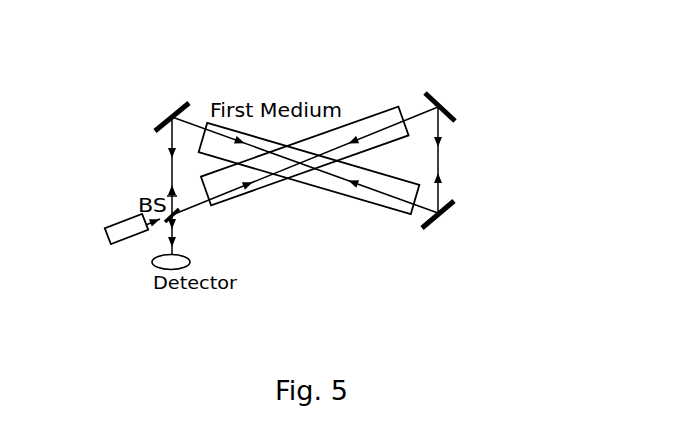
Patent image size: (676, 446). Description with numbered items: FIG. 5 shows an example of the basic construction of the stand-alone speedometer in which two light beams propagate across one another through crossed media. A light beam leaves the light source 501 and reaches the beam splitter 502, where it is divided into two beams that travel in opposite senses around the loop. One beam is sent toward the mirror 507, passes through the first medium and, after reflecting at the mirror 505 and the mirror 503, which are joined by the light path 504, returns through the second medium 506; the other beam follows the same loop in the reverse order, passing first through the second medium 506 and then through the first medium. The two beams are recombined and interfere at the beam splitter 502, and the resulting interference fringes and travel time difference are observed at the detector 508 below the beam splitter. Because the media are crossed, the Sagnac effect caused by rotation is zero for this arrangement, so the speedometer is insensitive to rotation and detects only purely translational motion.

The light source 501 is at (118, 212).
The beam splitter 502 is at (166, 192).
The mirror 503 is at (383, 183).
The optical path between mirrors 504 is at (447, 187).
The mirror 505 is at (451, 108).
The second medium 506 is at (373, 108).
The mirror 507 is at (172, 97).
The light beam from light source 508 is at (150, 247).